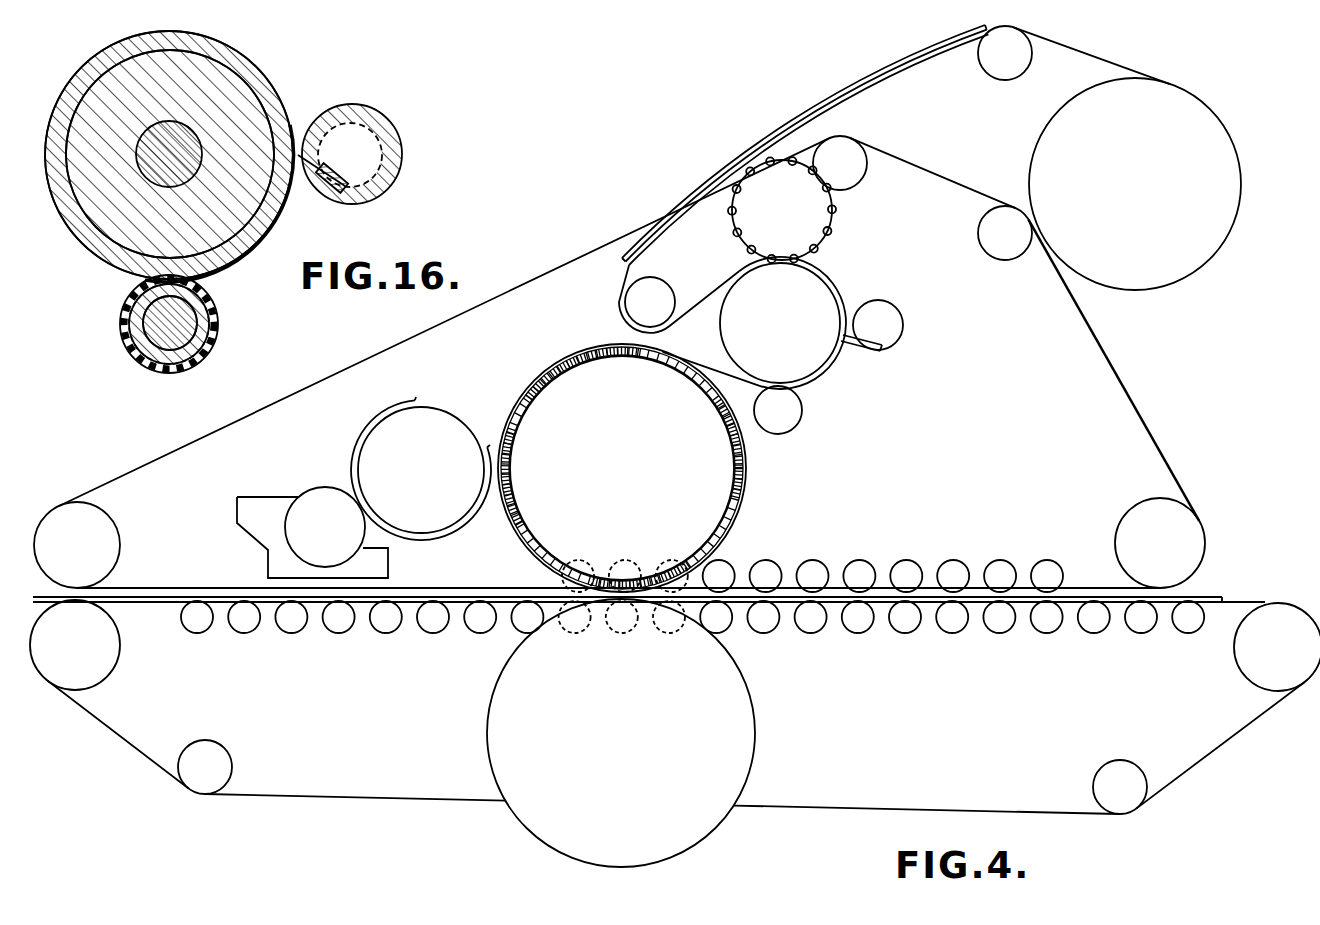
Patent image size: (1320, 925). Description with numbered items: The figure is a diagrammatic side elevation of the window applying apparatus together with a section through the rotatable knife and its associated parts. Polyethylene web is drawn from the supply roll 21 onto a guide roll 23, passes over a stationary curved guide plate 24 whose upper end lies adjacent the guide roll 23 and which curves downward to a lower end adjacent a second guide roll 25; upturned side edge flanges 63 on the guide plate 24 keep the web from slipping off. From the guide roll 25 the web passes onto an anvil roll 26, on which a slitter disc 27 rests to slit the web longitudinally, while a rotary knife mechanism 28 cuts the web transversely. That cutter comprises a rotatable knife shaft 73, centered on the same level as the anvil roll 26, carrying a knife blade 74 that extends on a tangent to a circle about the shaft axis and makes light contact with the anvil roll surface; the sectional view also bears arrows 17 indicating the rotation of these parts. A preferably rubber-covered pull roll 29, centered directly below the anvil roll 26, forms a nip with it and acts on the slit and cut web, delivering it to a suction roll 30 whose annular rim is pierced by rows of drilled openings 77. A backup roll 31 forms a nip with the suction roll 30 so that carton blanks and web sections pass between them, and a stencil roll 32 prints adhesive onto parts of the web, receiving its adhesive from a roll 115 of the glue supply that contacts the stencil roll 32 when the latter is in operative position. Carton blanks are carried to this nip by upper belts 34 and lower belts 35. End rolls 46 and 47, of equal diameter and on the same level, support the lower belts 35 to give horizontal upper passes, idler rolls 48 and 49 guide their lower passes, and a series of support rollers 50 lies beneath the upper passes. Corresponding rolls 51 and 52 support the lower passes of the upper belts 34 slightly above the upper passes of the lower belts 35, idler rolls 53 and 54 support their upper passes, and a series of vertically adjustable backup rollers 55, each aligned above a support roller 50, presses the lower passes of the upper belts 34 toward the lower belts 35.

In FIG. 16, the direction arrows 17 is at (297, 155).
In FIG. 4, the supply roll 21 is at (1239, 193).
In FIG. 4, the guide roll 23 is at (1015, 70).
In FIG. 4, the guide plate 24 is at (858, 77).
In FIG. 4, the guide roll 25 is at (634, 302).
In FIG. 16, the anvil roll 26 is at (264, 100).
In FIG. 4, the anvil roll 26 is at (826, 292).
In FIG. 4, the slitter disc 27 is at (733, 241).
In FIG. 4, the rotary knife mechanism 28 is at (893, 316).
In FIG. 16, the pull roll 29 is at (216, 310).
In FIG. 4, the pull roll 29 is at (802, 411).
In FIG. 4, the suction roll 30 is at (736, 502).
In FIG. 4, the backup roll 31 is at (705, 820).
In FIG. 4, the stencil roll 32 is at (440, 418).
In FIG. 4, the upper belts 34 is at (397, 352).
In FIG. 4, the lower belts 35 is at (788, 812).
In FIG. 4, the roll 46 is at (105, 666).
In FIG. 4, the roll 47 is at (1255, 665).
In FIG. 4, the idler roll 48 is at (218, 757).
In FIG. 4, the idler roll 49 is at (1112, 776).
In FIG. 4, the support rollers 50 is at (302, 632).
In FIG. 4, the roll 51 is at (106, 540).
In FIG. 4, the roll 52 is at (1192, 541).
In FIG. 4, the idler roll 53 is at (1003, 250).
In FIG. 4, the idler roll 54 is at (851, 176).
In FIG. 4, the backup rollers 55 is at (859, 560).
In FIG. 4, the upturned side edge flanges 63 is at (729, 148).
In FIG. 16, the knife shaft 73 is at (396, 136).
In FIG. 16, the knife blade 74 is at (300, 152).
In FIG. 4, the drilled openings 77 is at (740, 426).
In FIG. 4, the roll 115 is at (318, 497).